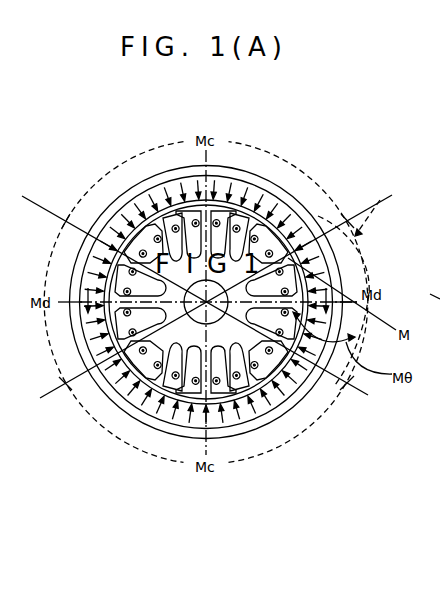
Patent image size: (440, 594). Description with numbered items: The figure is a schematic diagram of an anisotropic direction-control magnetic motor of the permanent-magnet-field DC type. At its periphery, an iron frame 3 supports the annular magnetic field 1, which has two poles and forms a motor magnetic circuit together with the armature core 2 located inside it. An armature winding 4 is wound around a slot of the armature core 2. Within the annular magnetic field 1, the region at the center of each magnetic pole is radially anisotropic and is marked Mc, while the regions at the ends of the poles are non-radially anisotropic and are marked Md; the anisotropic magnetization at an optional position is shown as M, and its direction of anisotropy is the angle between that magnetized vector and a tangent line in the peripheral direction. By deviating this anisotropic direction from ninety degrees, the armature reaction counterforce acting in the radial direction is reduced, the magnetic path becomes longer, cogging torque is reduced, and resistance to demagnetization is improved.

The annular magnetic field 1 is at (243, 192).
The armature core 2 is at (263, 212).
The iron frame 3 is at (178, 172).
The armature winding 4 is at (175, 210).